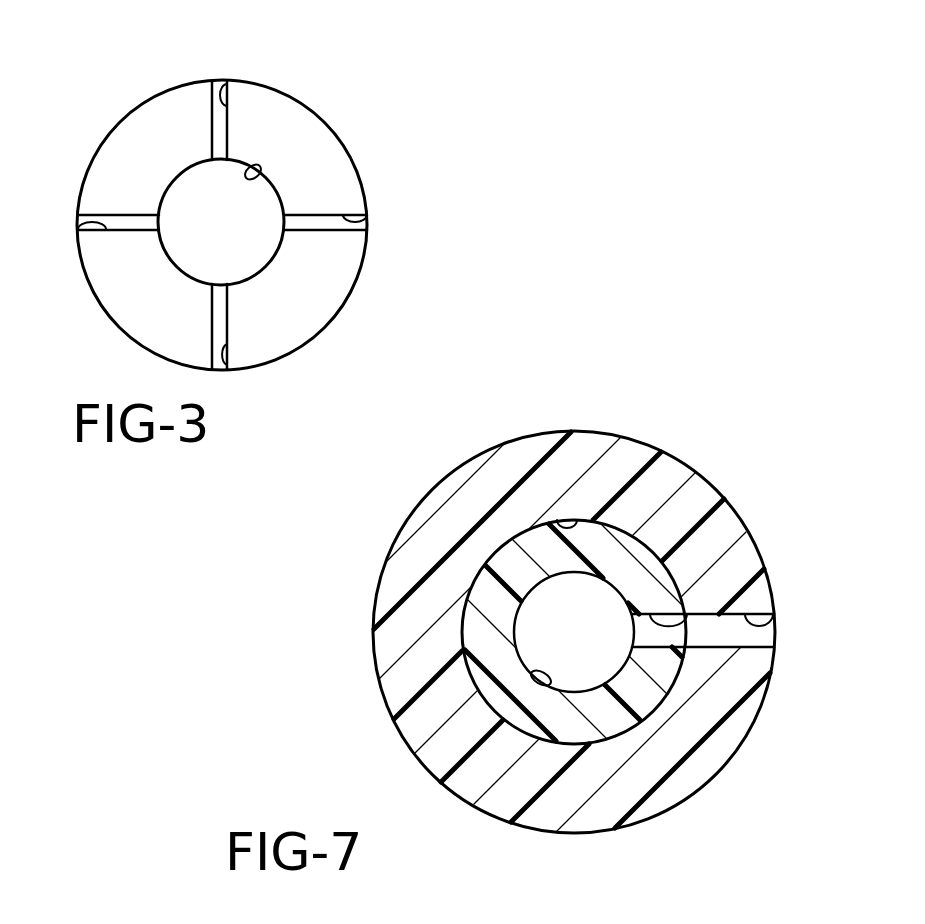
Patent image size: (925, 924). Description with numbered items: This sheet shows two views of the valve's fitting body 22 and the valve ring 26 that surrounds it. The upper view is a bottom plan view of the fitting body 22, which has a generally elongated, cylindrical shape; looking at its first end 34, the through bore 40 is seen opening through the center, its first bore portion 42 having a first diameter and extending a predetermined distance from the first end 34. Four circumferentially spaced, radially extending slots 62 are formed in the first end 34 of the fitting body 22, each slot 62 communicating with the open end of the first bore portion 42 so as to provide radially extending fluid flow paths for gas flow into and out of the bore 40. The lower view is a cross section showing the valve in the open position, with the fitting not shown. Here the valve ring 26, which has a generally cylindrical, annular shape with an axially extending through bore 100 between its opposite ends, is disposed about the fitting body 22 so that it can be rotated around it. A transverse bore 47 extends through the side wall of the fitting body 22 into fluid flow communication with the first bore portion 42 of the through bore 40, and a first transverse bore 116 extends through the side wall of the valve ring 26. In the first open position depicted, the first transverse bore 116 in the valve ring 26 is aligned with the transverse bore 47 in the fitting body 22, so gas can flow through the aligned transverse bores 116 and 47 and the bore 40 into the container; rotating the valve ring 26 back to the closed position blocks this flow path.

In FIG. 3, the fitting body 22 is at (118, 99).
In FIG. 7, the fitting body 22 is at (486, 590).
In FIG. 7, the valve ring 26 is at (487, 468).
In FIG. 3, the first end 34 is at (101, 173).
In FIG. 3, the through bore 40 is at (262, 256).
In FIG. 7, the through bore 40 is at (538, 643).
In FIG. 3, the first bore portion 42 is at (262, 178).
In FIG. 7, the first bore portion 42 is at (530, 682).
In FIG. 7, the transverse bore 47 is at (687, 616).
In FIG. 3, the slots 62 is at (222, 83).
In FIG. 7, the through bore 100 is at (562, 532).
In FIG. 7, the first transverse bore 116 is at (768, 627).